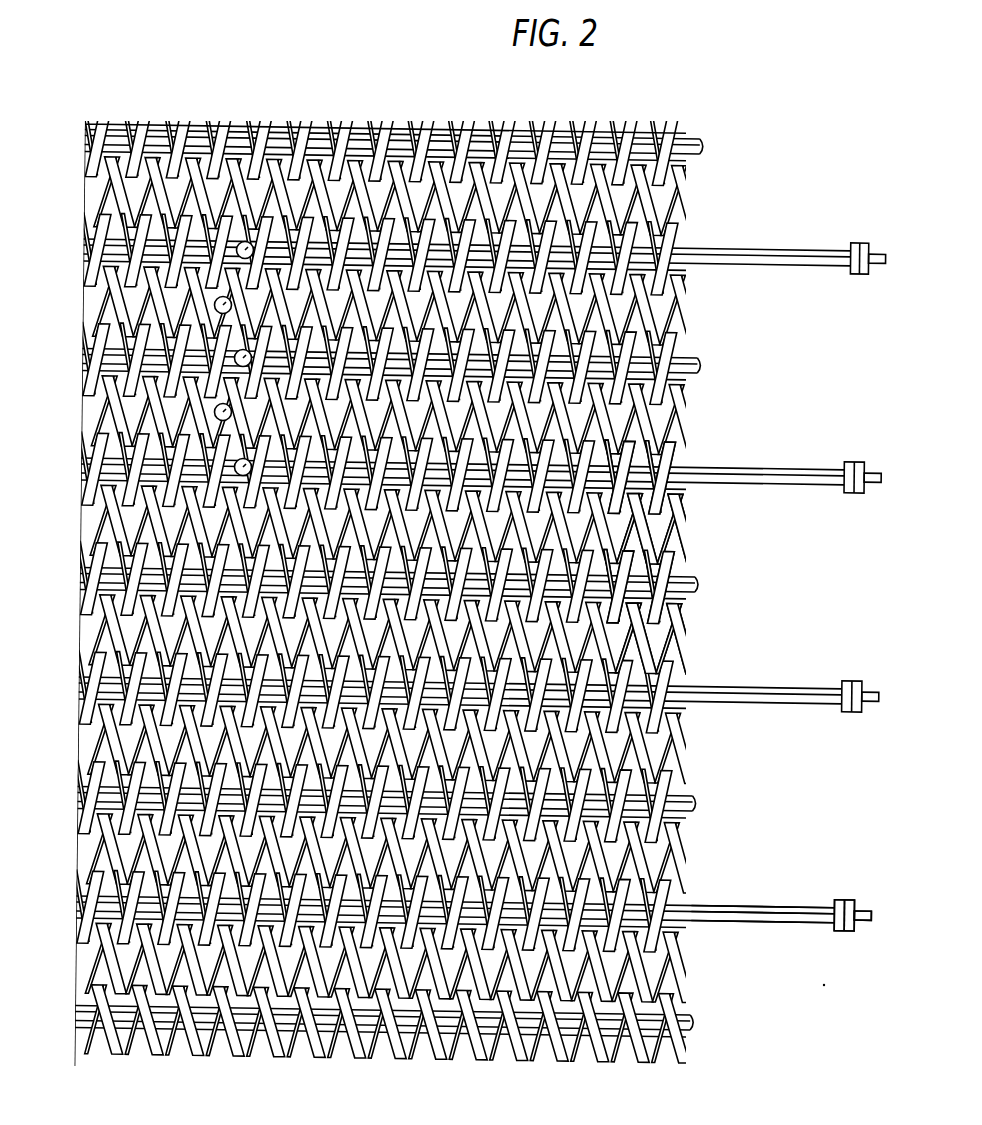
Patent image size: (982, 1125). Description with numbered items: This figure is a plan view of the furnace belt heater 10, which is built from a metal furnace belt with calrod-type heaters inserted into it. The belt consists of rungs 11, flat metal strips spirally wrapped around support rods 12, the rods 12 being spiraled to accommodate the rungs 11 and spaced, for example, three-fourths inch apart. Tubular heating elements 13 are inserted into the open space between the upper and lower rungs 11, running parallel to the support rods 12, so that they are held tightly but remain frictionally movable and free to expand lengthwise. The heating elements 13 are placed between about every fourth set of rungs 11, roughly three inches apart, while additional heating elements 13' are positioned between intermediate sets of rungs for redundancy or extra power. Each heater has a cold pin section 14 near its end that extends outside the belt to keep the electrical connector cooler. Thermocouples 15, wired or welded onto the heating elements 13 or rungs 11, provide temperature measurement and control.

The furnace belt heater 10 is at (743, 163).
The rungs 11 is at (672, 529).
The support rods 12 is at (695, 665).
The tubular heating elements 13 is at (481, 605).
The additional heating elements 13' is at (422, 795).
The cold pin section 14 is at (787, 907).
The thermocouples 15 is at (238, 247).